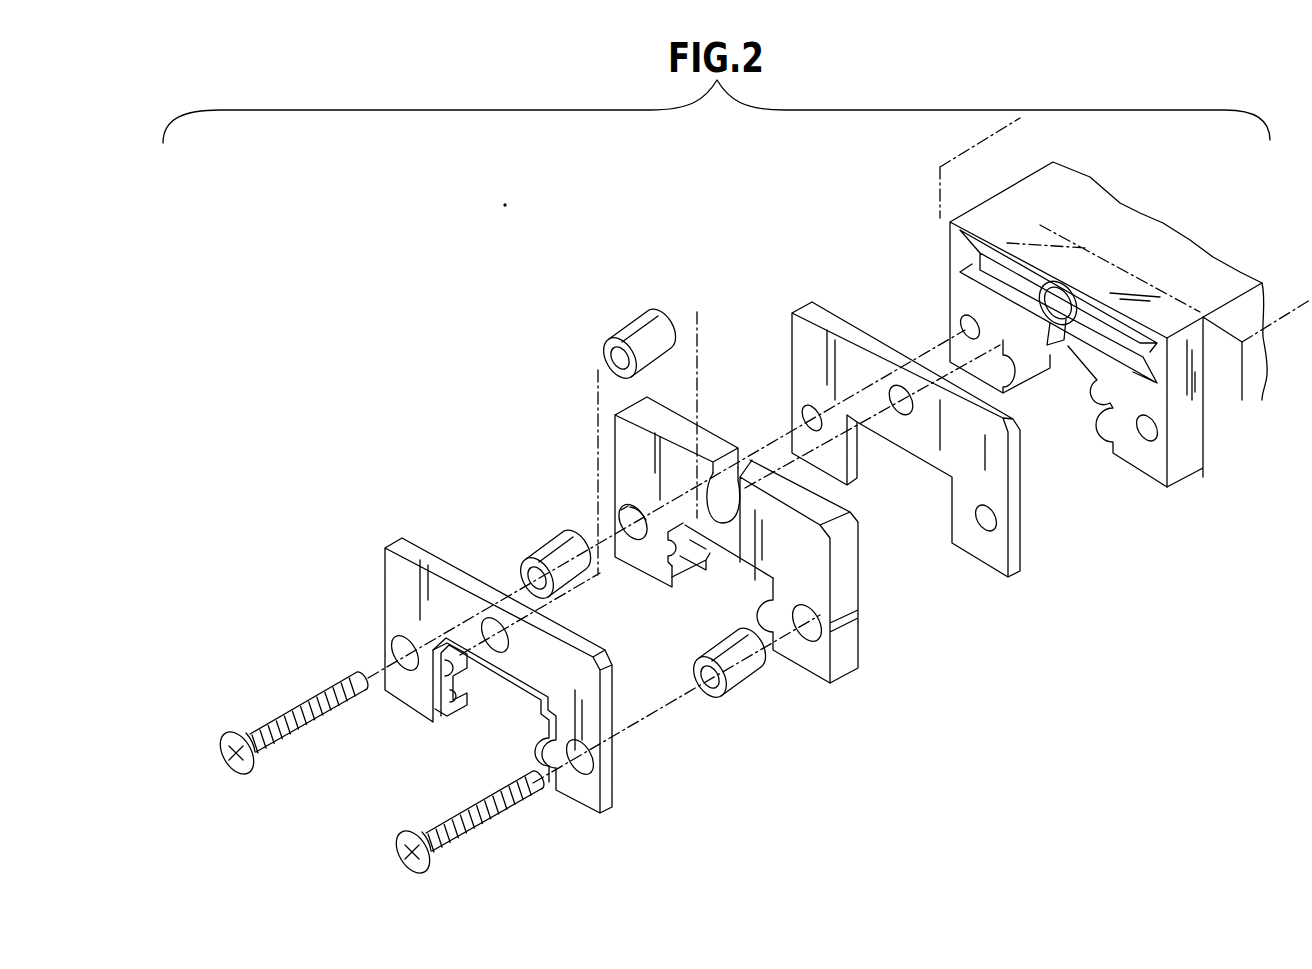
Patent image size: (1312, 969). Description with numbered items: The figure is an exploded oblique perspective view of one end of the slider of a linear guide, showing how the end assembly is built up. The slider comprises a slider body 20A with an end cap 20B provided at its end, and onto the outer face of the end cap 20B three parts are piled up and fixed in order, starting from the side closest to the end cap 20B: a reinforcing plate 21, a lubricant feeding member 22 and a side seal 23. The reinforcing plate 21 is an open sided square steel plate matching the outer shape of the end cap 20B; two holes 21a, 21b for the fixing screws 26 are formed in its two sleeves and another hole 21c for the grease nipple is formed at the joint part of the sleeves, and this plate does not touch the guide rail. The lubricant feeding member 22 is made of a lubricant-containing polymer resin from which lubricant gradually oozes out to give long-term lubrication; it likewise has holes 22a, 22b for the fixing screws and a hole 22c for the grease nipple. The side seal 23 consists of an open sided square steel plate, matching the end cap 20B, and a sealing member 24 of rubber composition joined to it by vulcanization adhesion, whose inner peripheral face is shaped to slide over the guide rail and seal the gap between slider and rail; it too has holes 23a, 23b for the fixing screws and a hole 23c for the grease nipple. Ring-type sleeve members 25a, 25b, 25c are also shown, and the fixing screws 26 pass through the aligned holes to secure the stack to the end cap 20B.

The slider body 20A is at (938, 164).
The end cap 20B is at (968, 207).
The reinforcing plate 21 is at (1000, 556).
The hole 21a is at (985, 530).
The hole 21b is at (806, 414).
The hole for the grease nipple 21c is at (896, 396).
The lubricant feeding member 22 is at (845, 670).
The hole 22a is at (815, 644).
The hole 22b is at (630, 541).
The hole for the grease nipple 22c is at (727, 518).
The side seal 23 is at (588, 812).
The hole 23a is at (573, 774).
The hole 23b is at (395, 651).
The hole for the grease nipple 23c is at (482, 626).
The sealing member 24 is at (430, 712).
The ring-type sleeve member 25a is at (745, 688).
The ring-type sleeve member 25b is at (556, 554).
The ring-type sleeve member 25c is at (638, 336).
The fixing screw 26 is at (276, 717).